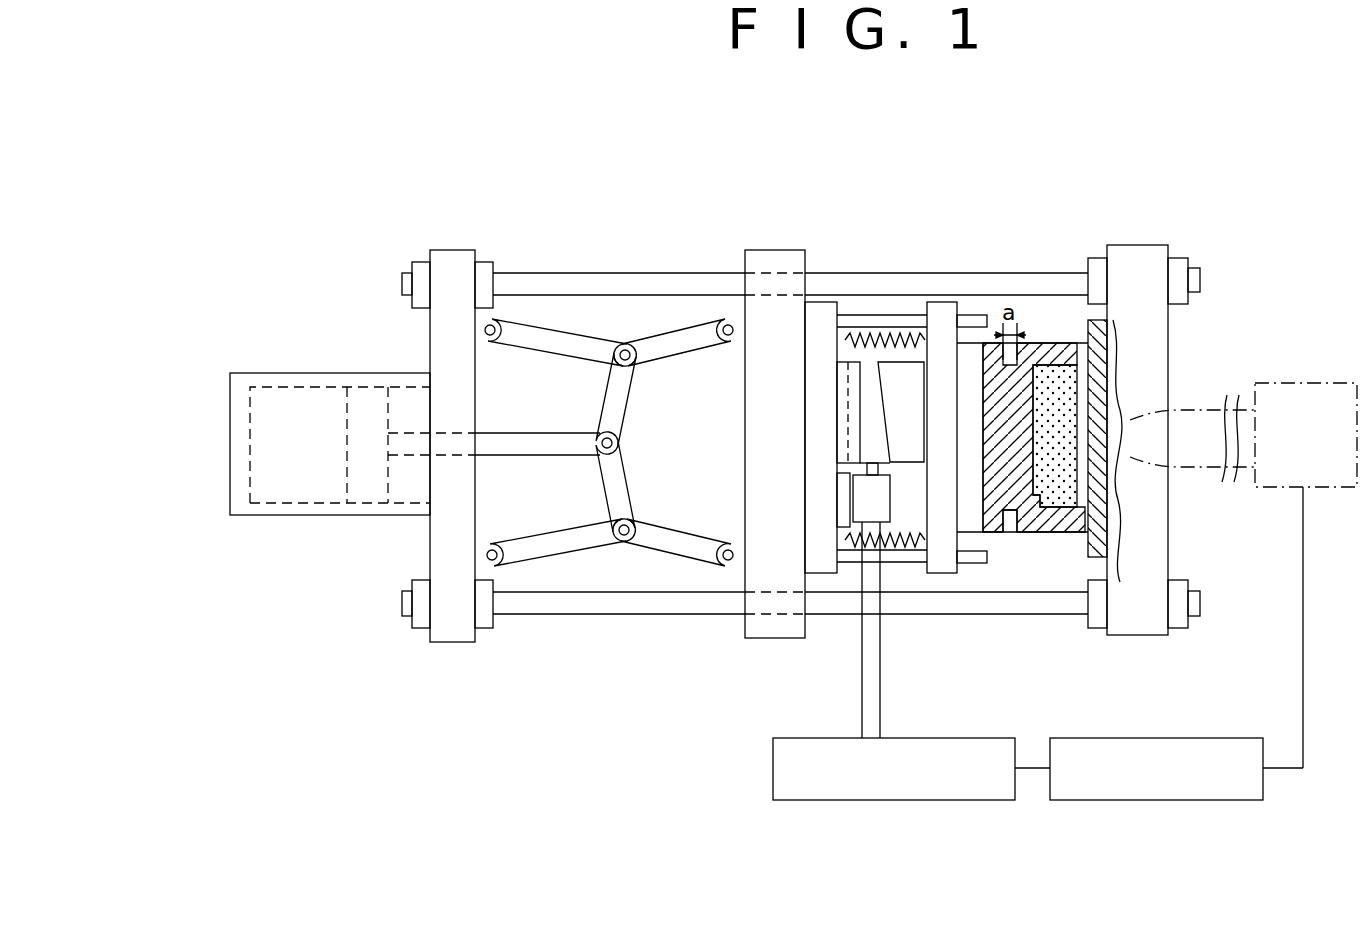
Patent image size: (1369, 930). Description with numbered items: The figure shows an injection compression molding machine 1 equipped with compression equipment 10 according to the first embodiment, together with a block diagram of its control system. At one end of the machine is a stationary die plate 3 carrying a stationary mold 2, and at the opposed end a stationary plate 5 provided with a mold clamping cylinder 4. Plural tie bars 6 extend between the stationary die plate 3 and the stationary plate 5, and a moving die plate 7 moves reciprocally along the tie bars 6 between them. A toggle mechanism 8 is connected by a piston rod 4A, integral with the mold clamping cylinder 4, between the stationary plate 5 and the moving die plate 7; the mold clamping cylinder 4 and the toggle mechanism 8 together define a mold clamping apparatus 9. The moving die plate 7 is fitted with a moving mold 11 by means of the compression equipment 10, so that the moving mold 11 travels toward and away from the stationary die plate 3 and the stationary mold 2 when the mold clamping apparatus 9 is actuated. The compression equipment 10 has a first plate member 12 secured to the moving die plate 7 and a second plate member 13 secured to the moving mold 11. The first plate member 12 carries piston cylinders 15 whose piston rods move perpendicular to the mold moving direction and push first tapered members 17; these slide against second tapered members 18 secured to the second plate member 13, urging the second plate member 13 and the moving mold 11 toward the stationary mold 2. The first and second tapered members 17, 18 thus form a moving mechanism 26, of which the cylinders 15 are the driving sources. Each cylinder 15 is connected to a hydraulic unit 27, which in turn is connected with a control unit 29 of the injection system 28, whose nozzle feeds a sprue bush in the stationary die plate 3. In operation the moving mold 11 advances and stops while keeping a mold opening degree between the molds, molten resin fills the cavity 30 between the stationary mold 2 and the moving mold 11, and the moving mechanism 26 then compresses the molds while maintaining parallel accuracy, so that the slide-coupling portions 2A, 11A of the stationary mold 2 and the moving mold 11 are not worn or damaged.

The injection compression molding machine 1 is at (838, 214).
The stationary mold 2 is at (1047, 345).
The slide-coupling portion 2A is at (992, 512).
The stationary die plate 3 is at (1138, 252).
The mold clamping cylinder 4 is at (283, 373).
The piston rod 4A is at (540, 447).
The stationary plate 5 is at (456, 262).
The tie bars 6 is at (685, 284).
The moving die plate 7 is at (760, 250).
The toggle mechanism 8 is at (572, 340).
The mold clamping apparatus 9 is at (609, 456).
The compression equipment 10 is at (895, 314).
The moving mold 11 is at (975, 355).
The slide-coupling portion 11A is at (1027, 535).
The first plate member 12 is at (820, 318).
The second plate member 13 is at (937, 318).
The piston cylinder 15 is at (880, 505).
The first tapered member 17 is at (868, 427).
The second tapered member 18 is at (912, 425).
The moving mechanism 26 is at (797, 509).
The hydraulic unit 27 is at (927, 802).
The injection system 28 is at (1331, 489).
The control unit 29 is at (1166, 802).
The cavity 30 is at (1052, 505).